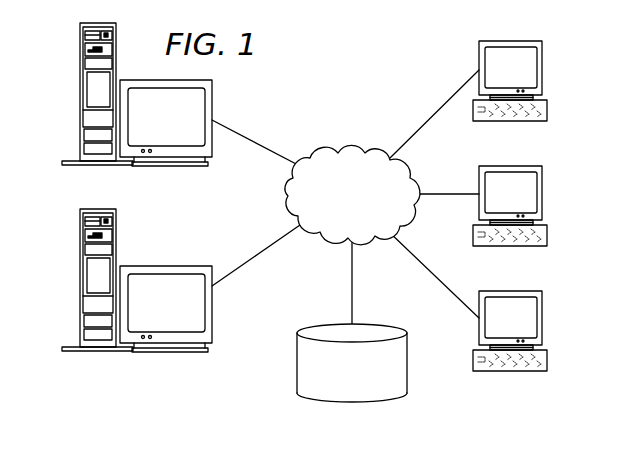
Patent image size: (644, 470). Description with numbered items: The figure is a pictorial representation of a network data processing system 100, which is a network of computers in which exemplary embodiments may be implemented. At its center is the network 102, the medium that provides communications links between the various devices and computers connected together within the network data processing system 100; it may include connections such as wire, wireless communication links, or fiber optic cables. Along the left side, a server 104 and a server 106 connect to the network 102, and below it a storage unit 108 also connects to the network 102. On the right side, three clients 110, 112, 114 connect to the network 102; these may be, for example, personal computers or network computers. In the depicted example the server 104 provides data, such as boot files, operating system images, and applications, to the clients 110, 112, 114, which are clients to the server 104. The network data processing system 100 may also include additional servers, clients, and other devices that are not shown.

The network data processing system 100 is at (400, 47).
The network 102 is at (327, 150).
The server 104 is at (80, 93).
The server 106 is at (80, 278).
The storage unit 108 is at (338, 401).
The client 110 is at (543, 69).
The client 112 is at (544, 195).
The client 114 is at (543, 318).